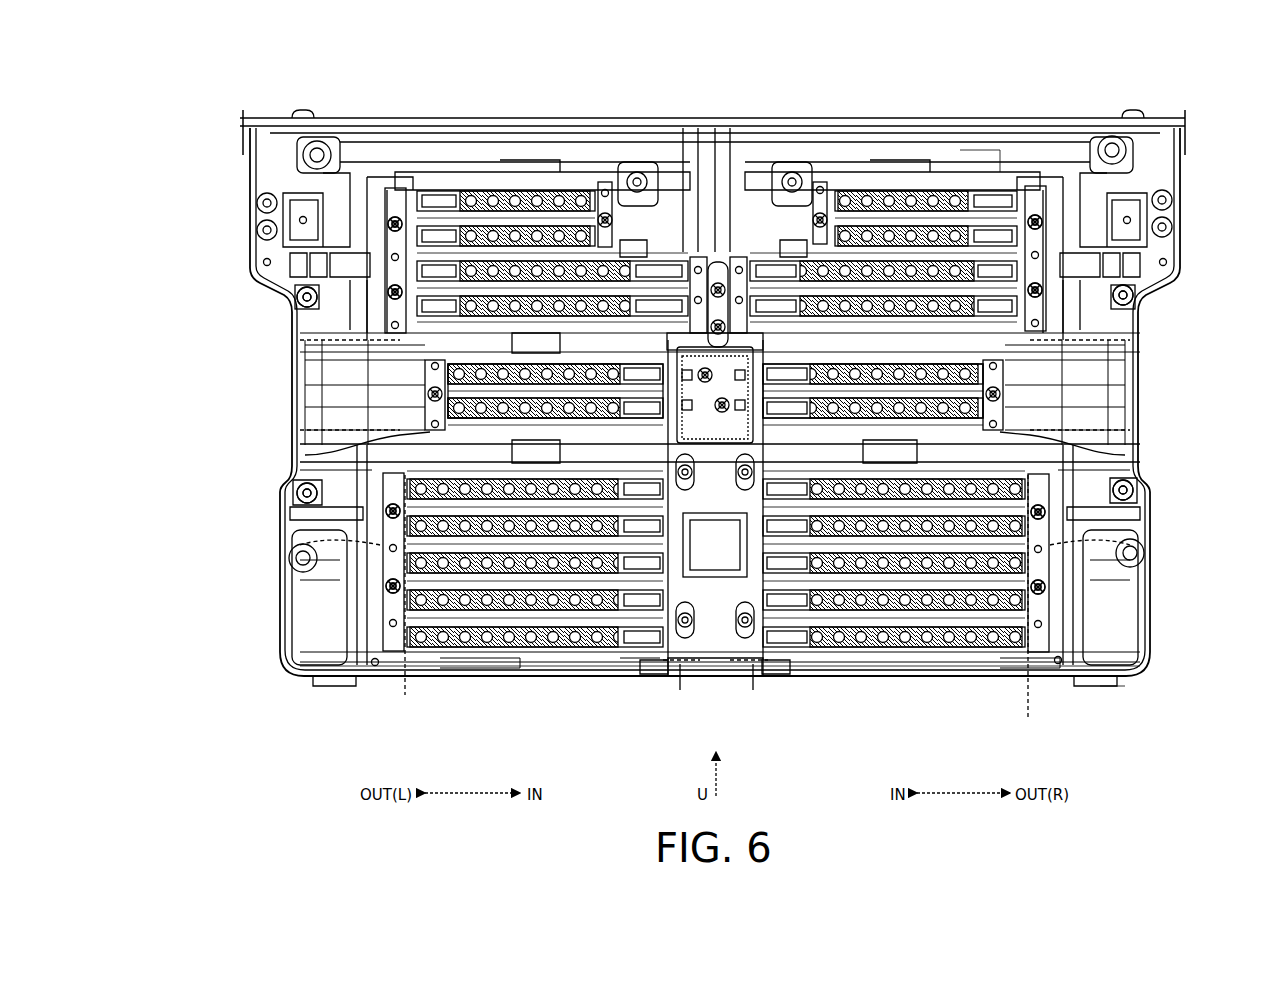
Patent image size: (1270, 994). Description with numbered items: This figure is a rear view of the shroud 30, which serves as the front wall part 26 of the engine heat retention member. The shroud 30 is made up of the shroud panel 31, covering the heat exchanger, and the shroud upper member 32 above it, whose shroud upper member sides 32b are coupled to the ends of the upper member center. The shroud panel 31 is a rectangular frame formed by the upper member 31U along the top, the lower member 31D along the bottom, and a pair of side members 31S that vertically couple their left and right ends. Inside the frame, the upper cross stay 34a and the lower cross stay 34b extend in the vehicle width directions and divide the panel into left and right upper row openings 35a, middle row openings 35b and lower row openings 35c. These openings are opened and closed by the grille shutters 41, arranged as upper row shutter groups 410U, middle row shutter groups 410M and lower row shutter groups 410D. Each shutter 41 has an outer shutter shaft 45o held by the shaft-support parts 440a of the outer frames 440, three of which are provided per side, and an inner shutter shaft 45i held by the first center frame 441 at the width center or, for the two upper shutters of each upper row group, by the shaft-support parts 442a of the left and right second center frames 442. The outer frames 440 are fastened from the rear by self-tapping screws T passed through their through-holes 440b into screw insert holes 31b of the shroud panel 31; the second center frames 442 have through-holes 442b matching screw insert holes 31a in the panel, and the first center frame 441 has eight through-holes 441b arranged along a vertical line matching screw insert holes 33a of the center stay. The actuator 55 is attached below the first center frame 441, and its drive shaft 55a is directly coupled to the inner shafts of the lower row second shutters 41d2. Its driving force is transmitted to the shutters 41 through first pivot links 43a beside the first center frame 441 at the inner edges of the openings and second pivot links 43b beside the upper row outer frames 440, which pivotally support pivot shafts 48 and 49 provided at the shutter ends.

The shroud 30 is at (1160, 56).
The shroud panel 31 is at (1150, 680).
The shroud upper member 32 is at (722, 110).
The shroud upper member side 32b is at (295, 114).
The screw insert hole 31a is at (642, 165).
The screw insert hole 31b is at (715, 394).
The upper member 31U is at (968, 160).
The lower member 31D is at (958, 684).
The side member 31S is at (290, 578).
The screw insert hole 33a is at (753, 692).
The upper cross stay 34a is at (542, 372).
The lower cross stay 34b is at (542, 486).
The upper row opening 35a is at (522, 172).
The middle row opening 35b is at (320, 448).
The lower row opening 35c is at (518, 664).
The grille shutter 41 is at (717, 596).
The lower row second shutter 41d2 is at (300, 545).
The first pivot link 43a is at (716, 682).
The second pivot link 43b is at (404, 186).
The shutter shaft 45i is at (668, 688).
The shutter shaft 45o is at (330, 340).
The pivot shaft 48 is at (655, 672).
The pivot shaft 49 is at (400, 216).
The actuator 55 is at (714, 500).
The drive shaft 55a is at (683, 490).
The upper row shutter group 410U is at (717, 249).
The middle row shutter group 410M is at (330, 372).
The lower row shutter group 410D is at (716, 584).
The outer frame 440 is at (716, 365).
The shaft-support part 440a is at (715, 534).
The through-hole 440b is at (268, 241).
The first center frame 441 is at (722, 258).
The through-hole 441b is at (708, 707).
The second center frame 442 is at (716, 162).
The shaft-support part 442a is at (603, 190).
The through-hole 442b is at (715, 152).
The self-tapping screw T is at (397, 172).
The front wall part 26 is at (1110, 700).